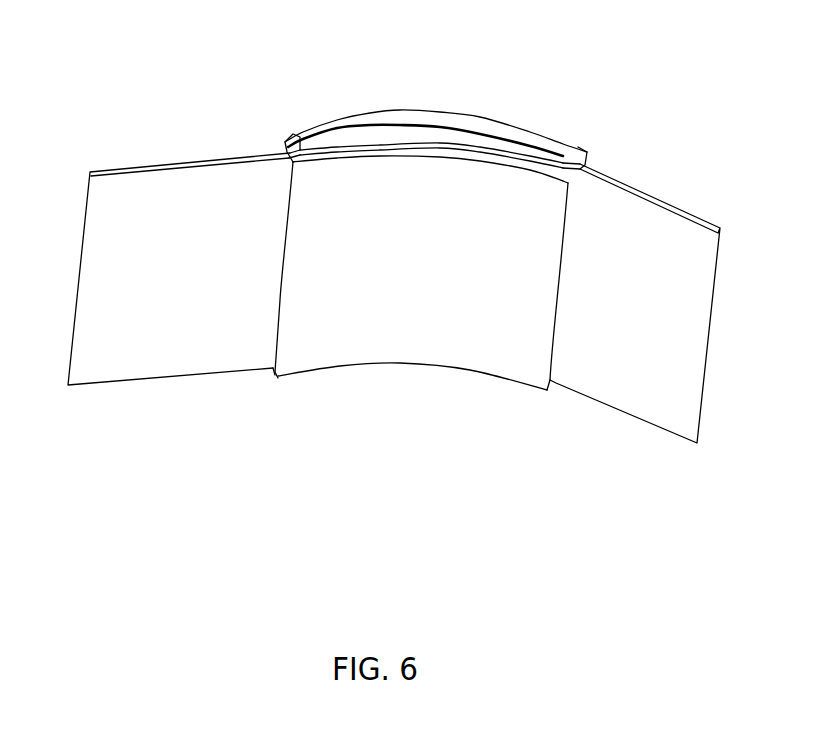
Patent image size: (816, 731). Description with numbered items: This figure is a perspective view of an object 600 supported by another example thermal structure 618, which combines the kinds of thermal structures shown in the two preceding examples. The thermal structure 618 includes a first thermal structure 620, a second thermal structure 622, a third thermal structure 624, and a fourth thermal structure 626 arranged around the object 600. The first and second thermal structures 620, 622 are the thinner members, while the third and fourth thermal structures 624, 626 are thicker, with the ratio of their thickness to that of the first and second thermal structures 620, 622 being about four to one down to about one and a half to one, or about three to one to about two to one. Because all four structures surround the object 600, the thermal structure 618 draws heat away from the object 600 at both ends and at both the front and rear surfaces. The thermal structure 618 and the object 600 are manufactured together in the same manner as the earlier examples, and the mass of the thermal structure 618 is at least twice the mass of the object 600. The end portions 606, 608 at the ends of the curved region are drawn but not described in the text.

The object 600 is at (455, 122).
The first end portion 606 is at (322, 143).
The second end portion 608 is at (567, 158).
The thermal structure 618 is at (394, 76).
The first thermal structure 620 is at (100, 265).
The second thermal structure 622 is at (695, 318).
The third thermal structure 624 is at (345, 158).
The fourth thermal structure 626 is at (518, 128).